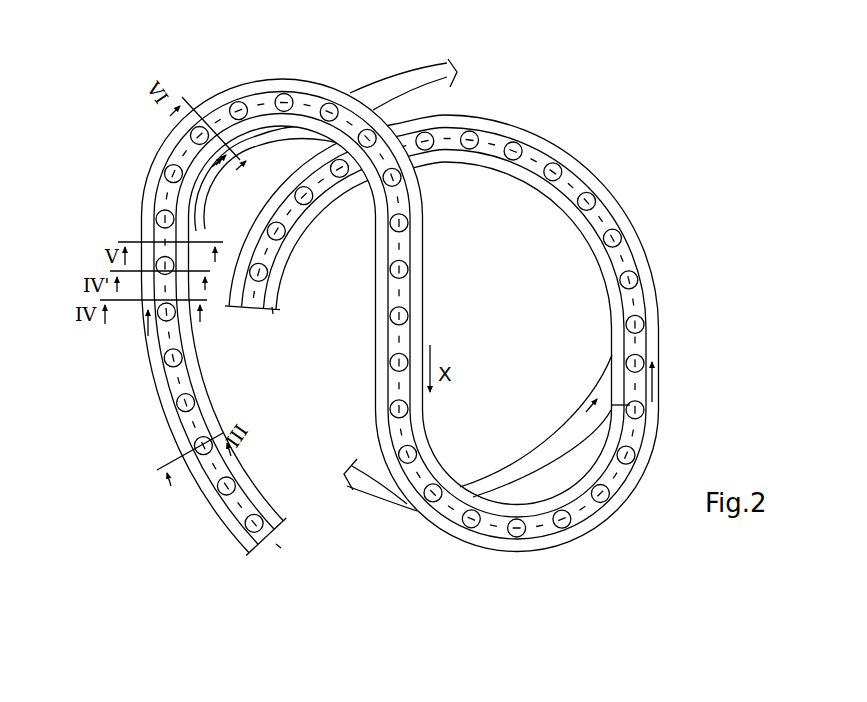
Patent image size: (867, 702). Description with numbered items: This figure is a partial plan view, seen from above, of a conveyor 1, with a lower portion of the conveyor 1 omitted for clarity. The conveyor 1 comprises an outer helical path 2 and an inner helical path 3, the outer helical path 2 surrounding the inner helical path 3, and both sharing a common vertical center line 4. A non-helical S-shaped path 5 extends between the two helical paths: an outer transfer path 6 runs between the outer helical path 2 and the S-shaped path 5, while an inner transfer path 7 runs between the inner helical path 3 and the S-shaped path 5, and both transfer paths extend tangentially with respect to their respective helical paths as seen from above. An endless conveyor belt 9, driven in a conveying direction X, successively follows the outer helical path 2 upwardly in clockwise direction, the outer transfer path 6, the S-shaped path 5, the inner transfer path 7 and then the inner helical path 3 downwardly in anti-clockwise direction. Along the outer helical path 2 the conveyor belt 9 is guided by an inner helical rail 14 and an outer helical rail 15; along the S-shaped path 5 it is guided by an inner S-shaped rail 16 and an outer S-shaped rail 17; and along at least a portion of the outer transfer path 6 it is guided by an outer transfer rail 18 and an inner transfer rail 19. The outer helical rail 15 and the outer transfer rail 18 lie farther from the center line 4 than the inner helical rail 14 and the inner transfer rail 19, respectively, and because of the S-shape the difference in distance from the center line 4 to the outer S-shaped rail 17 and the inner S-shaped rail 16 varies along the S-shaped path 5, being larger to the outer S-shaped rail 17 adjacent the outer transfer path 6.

The conveyor 1 is at (624, 110).
The outer helical path 2 is at (127, 343).
The inner helical path 3 is at (598, 155).
The center line 4 is at (441, 333).
The S-shaped path 5 is at (285, 46).
The outer transfer path 6 is at (58, 222).
The inner transfer path 7 is at (679, 315).
The conveyor belt 9 is at (257, 481).
The inner helical rail 14 is at (257, 507).
The outer helical rail 15 is at (267, 527).
The inner S-shaped rail 16 is at (307, 123).
The outer S-shaped rail 17 is at (300, 82).
The outer transfer rail 18 is at (149, 288).
The inner transfer rail 19 is at (185, 242).